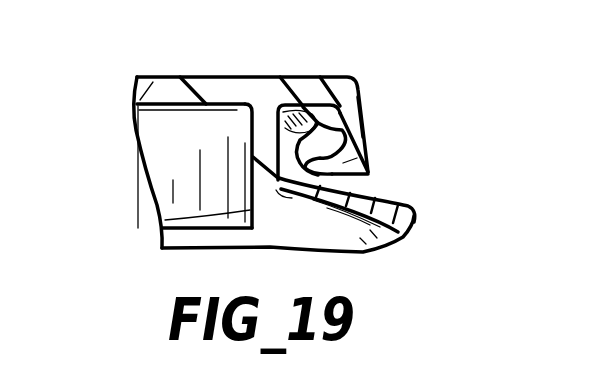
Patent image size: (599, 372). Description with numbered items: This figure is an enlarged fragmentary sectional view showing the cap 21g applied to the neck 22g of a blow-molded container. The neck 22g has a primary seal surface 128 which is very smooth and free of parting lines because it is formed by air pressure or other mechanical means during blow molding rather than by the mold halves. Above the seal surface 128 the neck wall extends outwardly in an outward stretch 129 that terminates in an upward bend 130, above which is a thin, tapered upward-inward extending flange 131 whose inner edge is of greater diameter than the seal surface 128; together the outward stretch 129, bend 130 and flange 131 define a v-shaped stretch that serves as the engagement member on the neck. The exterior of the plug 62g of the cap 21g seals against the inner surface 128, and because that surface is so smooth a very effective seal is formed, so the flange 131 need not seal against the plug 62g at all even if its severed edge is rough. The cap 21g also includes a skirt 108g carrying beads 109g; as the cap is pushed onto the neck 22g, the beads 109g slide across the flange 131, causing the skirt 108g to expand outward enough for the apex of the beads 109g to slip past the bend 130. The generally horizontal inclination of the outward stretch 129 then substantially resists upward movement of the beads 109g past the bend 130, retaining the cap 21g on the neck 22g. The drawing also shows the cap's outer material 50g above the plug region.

The cap 21g is at (150, 67).
The cover material 50g is at (221, 86).
The outward stretch 129 is at (310, 123).
The primary seal surface 128 is at (253, 165).
The plug 62g is at (160, 225).
The skirt 108g is at (362, 106).
The upward bend 130 is at (363, 137).
The flange 131 is at (312, 122).
The beads 109g is at (366, 160).
The neck 22g is at (417, 209).